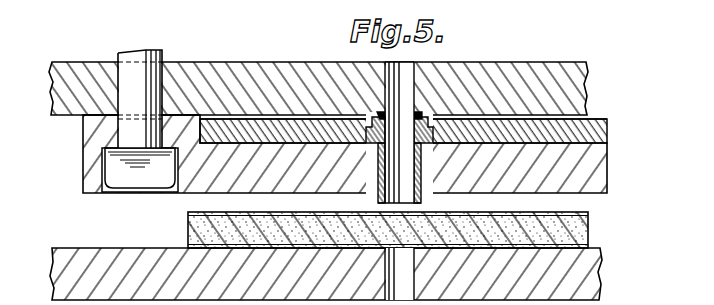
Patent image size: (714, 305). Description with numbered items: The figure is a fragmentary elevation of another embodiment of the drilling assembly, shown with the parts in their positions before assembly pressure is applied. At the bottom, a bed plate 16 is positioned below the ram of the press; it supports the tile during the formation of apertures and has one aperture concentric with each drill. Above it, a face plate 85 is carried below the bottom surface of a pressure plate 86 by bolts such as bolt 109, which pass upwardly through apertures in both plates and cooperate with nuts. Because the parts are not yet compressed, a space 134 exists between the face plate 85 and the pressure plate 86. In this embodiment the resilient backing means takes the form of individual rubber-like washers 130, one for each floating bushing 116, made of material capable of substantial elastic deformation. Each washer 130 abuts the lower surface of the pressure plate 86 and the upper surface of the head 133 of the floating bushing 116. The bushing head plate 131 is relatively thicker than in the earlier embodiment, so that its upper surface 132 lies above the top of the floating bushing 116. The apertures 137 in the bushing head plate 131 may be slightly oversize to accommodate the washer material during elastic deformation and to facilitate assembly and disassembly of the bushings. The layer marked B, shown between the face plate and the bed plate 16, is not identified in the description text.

The bolt 109 is at (149, 51).
The pressure plate 86 is at (213, 69).
The space 134 is at (86, 116).
The face plate 85 is at (83, 160).
The aperture 137 is at (383, 114).
The washer 130 is at (423, 112).
The head 133 is at (433, 130).
The upper surface 132 is at (592, 118).
The bushing head plate 131 is at (593, 130).
The board B is at (590, 233).
The bed plate 16 is at (598, 284).
The floating bushing 116 is at (378, 175).